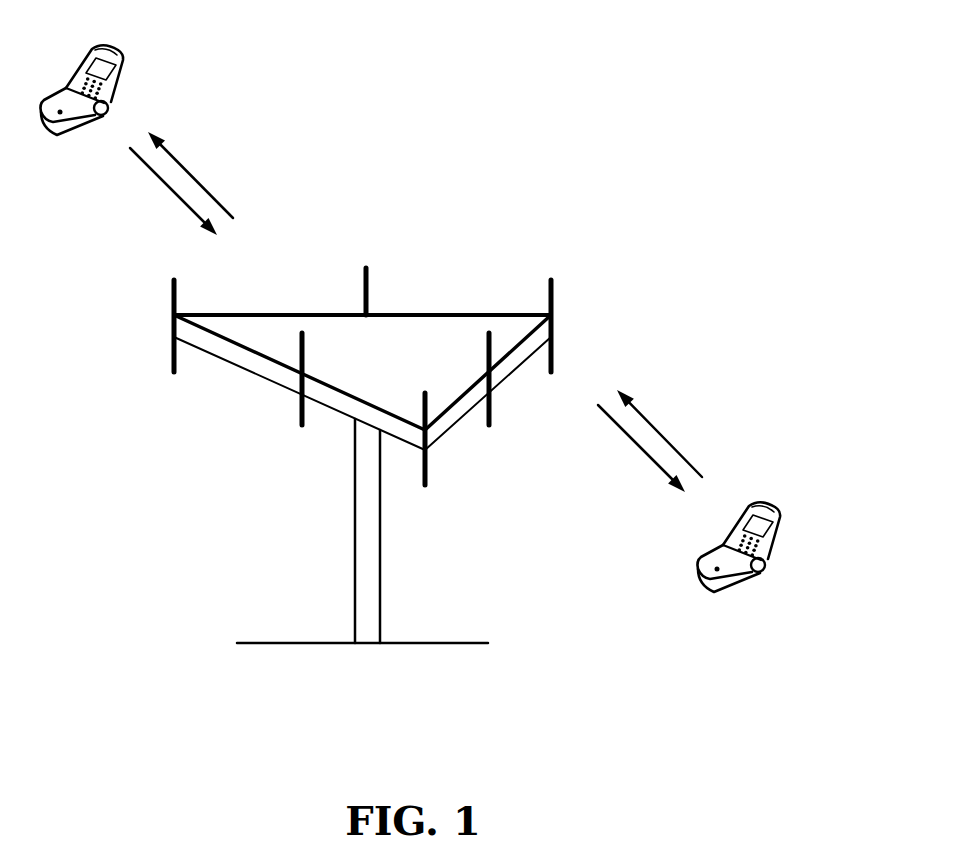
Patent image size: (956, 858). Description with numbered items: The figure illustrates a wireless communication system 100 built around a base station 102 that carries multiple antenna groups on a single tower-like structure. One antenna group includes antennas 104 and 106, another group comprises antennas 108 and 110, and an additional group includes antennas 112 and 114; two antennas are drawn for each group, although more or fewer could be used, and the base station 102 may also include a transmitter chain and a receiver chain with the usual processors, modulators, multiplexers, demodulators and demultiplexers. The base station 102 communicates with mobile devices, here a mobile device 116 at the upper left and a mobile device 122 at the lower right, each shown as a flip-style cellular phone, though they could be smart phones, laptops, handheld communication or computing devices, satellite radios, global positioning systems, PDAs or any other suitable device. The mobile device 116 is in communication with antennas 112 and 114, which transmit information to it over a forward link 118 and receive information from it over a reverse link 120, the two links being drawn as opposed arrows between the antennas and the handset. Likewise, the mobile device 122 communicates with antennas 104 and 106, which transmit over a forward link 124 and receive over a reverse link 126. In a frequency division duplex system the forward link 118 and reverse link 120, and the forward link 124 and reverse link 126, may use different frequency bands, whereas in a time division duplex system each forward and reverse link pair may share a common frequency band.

The wireless communication system 100 is at (525, 88).
The base station 102 is at (381, 647).
The antenna 104 is at (551, 282).
The antenna 106 is at (489, 405).
The antenna 108 is at (425, 465).
The antenna 110 is at (302, 426).
The antenna 112 is at (174, 282).
The antenna 114 is at (366, 276).
The mobile device 116 is at (102, 46).
The forward link 118 is at (193, 177).
The reverse link 120 is at (182, 201).
The mobile device 122 is at (752, 502).
The forward link 124 is at (646, 453).
The reverse link 126 is at (655, 429).